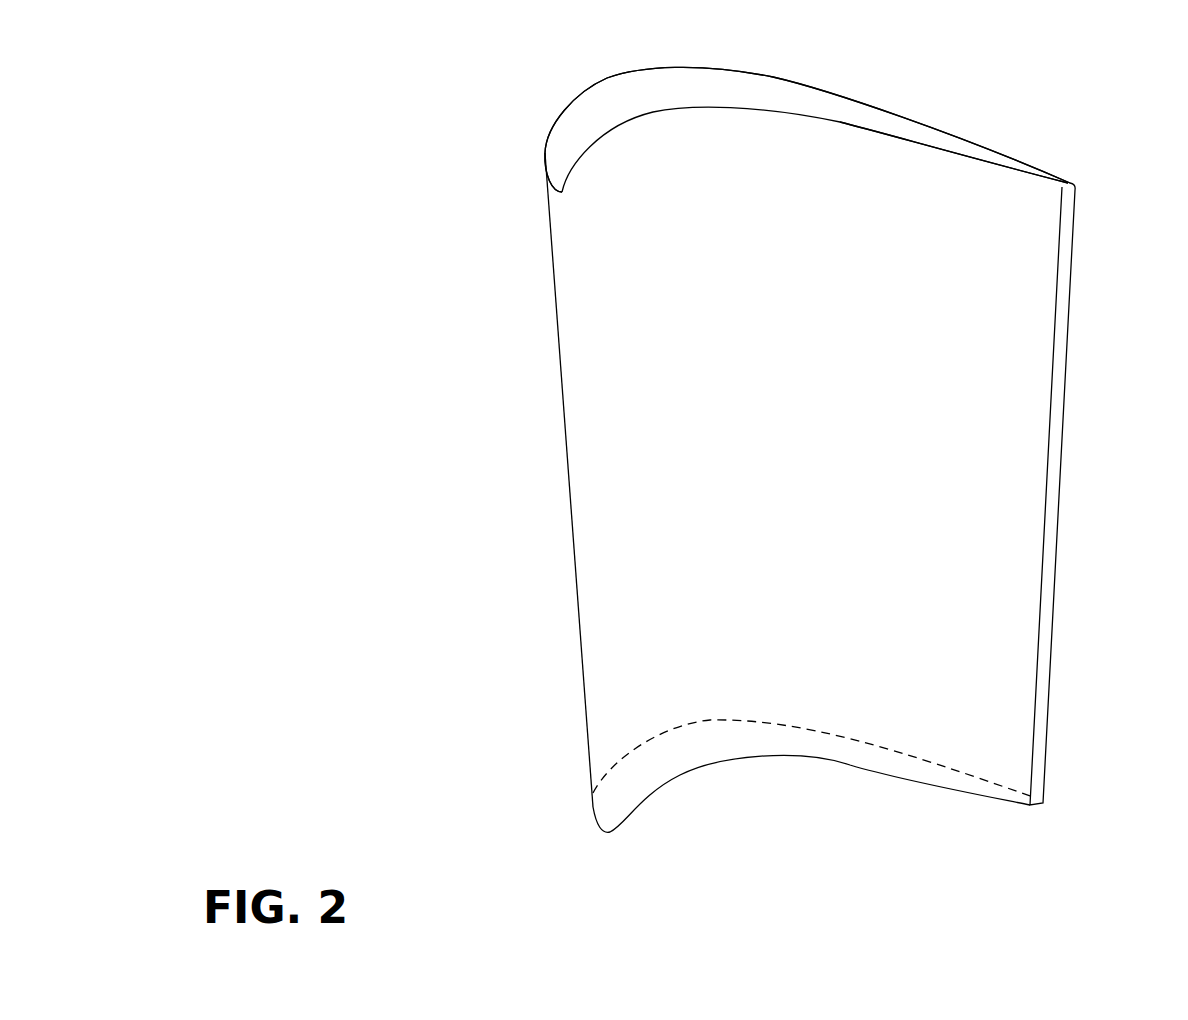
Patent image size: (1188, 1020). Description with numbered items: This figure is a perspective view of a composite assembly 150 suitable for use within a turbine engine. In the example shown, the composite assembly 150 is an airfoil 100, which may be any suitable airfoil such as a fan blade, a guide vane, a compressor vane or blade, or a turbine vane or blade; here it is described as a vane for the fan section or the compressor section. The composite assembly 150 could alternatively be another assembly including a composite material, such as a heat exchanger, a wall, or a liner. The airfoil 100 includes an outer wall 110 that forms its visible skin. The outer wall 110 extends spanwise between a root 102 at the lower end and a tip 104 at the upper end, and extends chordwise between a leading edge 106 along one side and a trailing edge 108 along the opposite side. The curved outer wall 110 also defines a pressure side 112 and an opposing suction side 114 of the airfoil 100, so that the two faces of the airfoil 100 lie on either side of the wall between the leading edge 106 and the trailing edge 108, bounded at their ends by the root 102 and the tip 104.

The airfoil 100 is at (857, 100).
The root 102 is at (630, 812).
The tip 104 is at (590, 122).
The leading edge 106 is at (552, 253).
The trailing edge 108 is at (1065, 427).
The outer wall 110 is at (545, 153).
The pressure side 112 is at (948, 170).
The suction side 114 is at (952, 135).
The composite assembly 150 is at (365, 78).